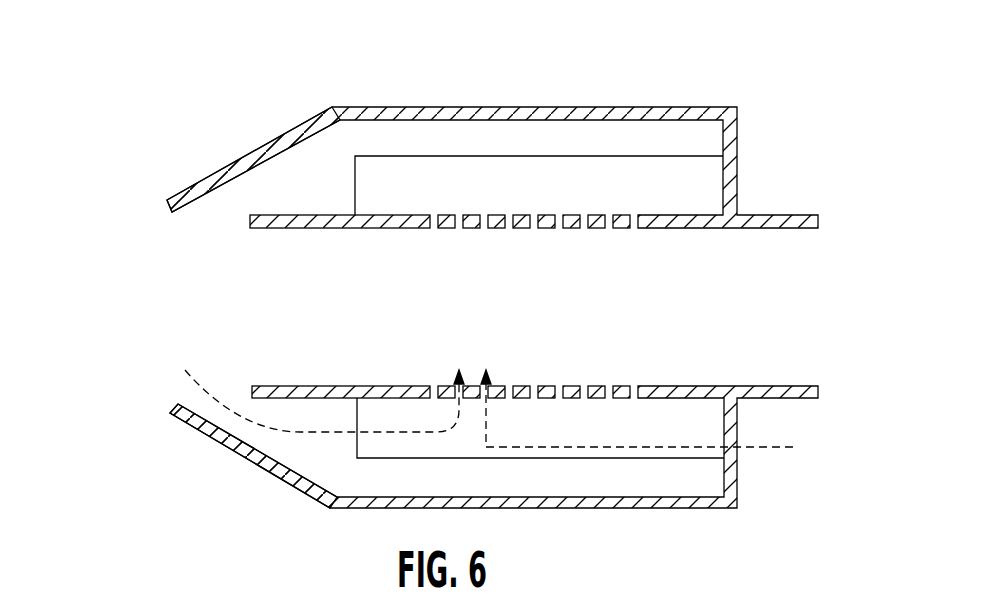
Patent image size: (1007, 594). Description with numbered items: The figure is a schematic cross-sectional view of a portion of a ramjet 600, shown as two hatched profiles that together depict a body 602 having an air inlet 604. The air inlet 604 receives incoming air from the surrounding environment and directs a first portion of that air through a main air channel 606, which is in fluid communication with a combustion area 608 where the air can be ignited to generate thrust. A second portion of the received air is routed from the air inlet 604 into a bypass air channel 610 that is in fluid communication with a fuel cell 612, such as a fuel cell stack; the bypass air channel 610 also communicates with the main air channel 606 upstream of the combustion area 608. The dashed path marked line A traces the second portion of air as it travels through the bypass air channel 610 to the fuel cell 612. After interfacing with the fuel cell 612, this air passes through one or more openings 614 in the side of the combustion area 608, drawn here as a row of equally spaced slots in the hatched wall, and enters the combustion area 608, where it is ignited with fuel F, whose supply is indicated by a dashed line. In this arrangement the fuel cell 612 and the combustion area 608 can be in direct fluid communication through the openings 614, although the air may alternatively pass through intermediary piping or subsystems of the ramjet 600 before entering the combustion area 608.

The ramjet 600 is at (163, 85).
The body 602 is at (313, 125).
The air inlet 604 is at (136, 256).
The main air channel 606 is at (277, 327).
The combustion area 608 is at (607, 317).
The bypass air channel 610 is at (268, 173).
The fuel cell 612 is at (553, 211).
The openings 614 is at (433, 385).
The line A is at (207, 372).
The fuel F is at (763, 447).